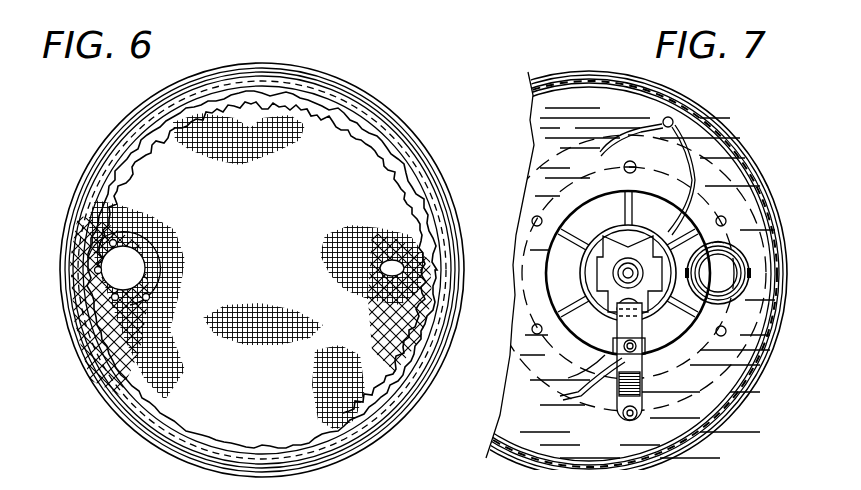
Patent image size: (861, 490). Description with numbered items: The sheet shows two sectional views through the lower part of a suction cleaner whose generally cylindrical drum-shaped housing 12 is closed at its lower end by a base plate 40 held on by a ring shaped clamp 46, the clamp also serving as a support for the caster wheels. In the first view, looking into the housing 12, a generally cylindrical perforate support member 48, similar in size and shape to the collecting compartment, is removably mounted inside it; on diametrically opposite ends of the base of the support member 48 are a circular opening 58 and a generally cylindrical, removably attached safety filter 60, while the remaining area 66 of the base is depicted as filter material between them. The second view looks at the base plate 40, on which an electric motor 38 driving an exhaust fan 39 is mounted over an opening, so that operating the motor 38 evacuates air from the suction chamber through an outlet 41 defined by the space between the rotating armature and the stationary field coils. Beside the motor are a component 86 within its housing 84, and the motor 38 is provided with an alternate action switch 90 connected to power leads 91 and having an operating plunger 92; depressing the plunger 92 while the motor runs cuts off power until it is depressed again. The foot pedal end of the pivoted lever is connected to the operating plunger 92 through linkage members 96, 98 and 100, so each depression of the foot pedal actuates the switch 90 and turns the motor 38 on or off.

In FIG. 6, the housing 12 is at (400, 153).
In FIG. 7, the housing 12 is at (589, 274).
In FIG. 6, the ring shaped clamp 46 is at (148, 443).
In FIG. 6, the perforate support member 48 is at (355, 118).
In FIG. 6, the lining material 66 is at (74, 412).
In FIG. 6, the circular opening 58 is at (95, 282).
In FIG. 6, the safety filter 60 is at (362, 232).
In FIG. 7, the base plate 40 is at (510, 426).
In FIG. 7, the exhaust fan 39 is at (628, 273).
In FIG. 7, the outlet 41 is at (600, 270).
In FIG. 7, the electric motor 38 is at (605, 292).
In FIG. 7, the adjuster 86 is at (718, 273).
In FIG. 7, the adjuster housing 84 is at (716, 246).
In FIG. 7, the power leads 91 is at (694, 172).
In FIG. 7, the alternate action switch 90 is at (645, 338).
In FIG. 7, the linkage member 100 is at (648, 322).
In FIG. 7, the linkage member 96 is at (640, 418).
In FIG. 7, the operating plunger 92 is at (605, 368).
In FIG. 7, the linkage member 98 is at (616, 400).